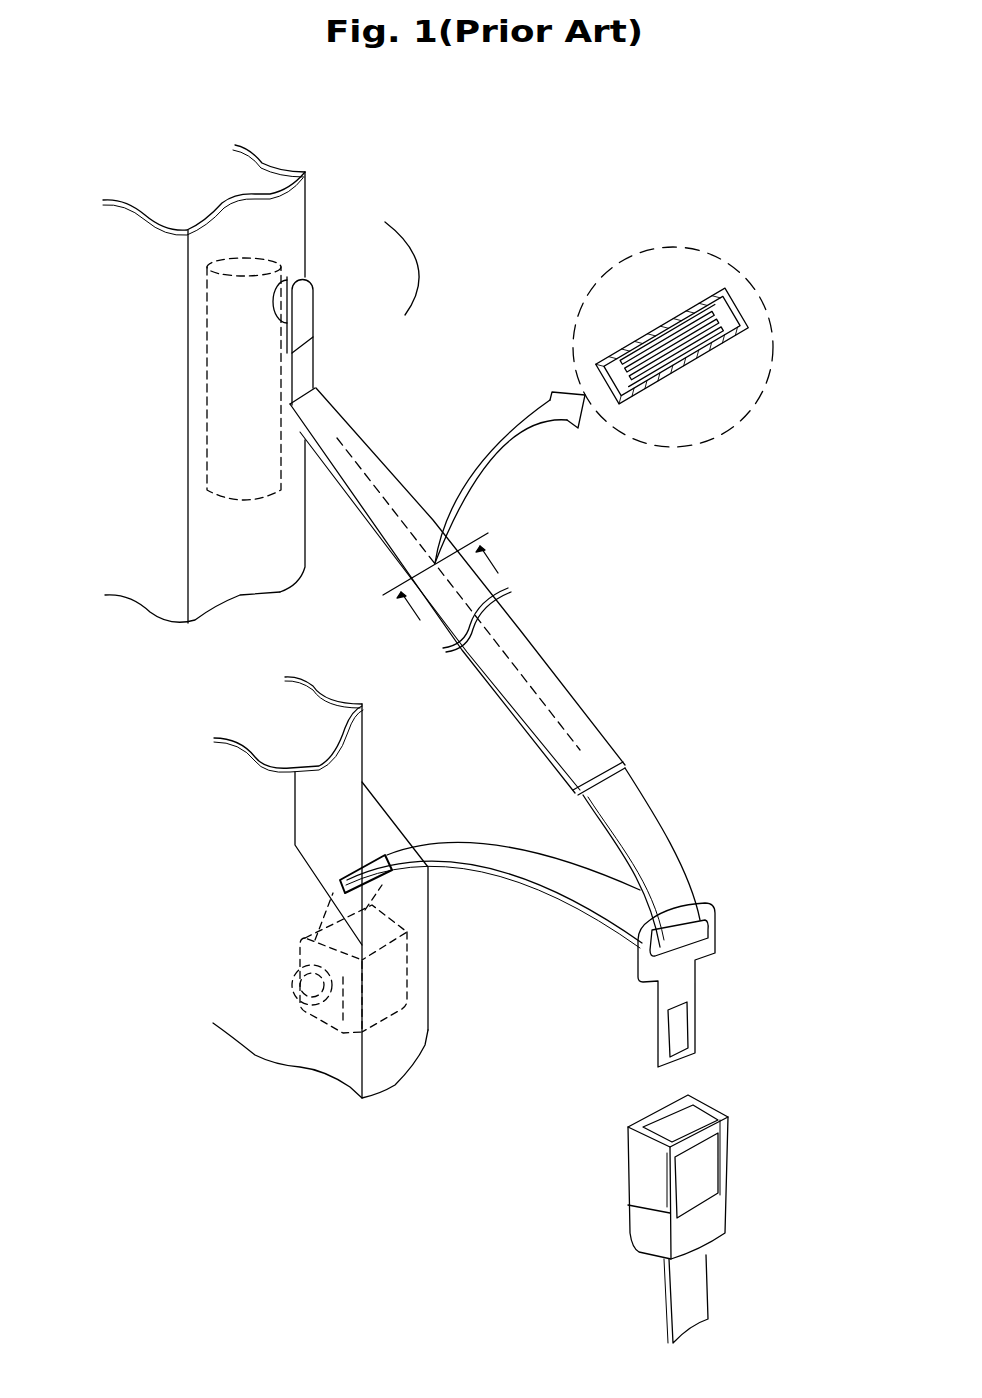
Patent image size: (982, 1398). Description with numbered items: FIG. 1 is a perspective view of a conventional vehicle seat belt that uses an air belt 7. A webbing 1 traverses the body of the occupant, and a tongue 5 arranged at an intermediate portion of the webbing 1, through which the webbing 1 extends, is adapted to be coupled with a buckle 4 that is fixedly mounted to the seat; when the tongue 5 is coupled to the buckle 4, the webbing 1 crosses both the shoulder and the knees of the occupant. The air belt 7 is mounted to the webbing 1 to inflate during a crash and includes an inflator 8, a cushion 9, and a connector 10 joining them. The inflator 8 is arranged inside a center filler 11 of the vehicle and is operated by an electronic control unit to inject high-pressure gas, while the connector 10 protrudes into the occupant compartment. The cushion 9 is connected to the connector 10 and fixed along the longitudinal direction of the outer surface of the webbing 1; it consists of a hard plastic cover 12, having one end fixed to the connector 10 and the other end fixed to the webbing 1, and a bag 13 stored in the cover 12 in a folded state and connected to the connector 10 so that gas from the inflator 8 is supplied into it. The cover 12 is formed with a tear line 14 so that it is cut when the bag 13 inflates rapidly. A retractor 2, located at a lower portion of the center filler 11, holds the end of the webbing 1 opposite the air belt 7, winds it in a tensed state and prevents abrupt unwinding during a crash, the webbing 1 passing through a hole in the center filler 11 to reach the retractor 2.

The webbing 1 is at (633, 797).
The retractor 2 is at (310, 988).
The buckle 4 is at (705, 1173).
The tongue 5 is at (707, 940).
The air belt 7 is at (410, 268).
The inflator 8 is at (245, 265).
The cushion 9 is at (330, 401).
The connector 10 is at (302, 295).
The center filler 11 is at (188, 429).
The cover 12 is at (748, 313).
The bag 13 is at (650, 335).
The tear line 14 is at (543, 699).